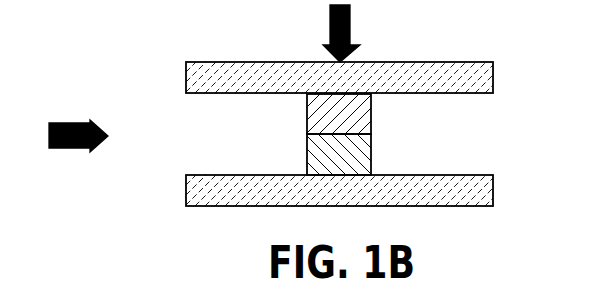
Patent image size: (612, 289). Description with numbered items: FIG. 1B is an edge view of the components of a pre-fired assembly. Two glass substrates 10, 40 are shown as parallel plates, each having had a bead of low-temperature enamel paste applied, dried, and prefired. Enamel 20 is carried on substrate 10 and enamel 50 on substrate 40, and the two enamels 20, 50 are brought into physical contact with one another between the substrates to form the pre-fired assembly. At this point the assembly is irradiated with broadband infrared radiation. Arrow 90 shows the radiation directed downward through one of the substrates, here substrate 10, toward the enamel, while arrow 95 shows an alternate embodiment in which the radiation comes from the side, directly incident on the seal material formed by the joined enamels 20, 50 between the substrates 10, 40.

The substrate 10 is at (186, 73).
The enamel 20 is at (307, 110).
The substrate 40 is at (186, 186).
The enamel 50 is at (371, 153).
The arrow 90 is at (330, 22).
The arrow 95 is at (70, 121).